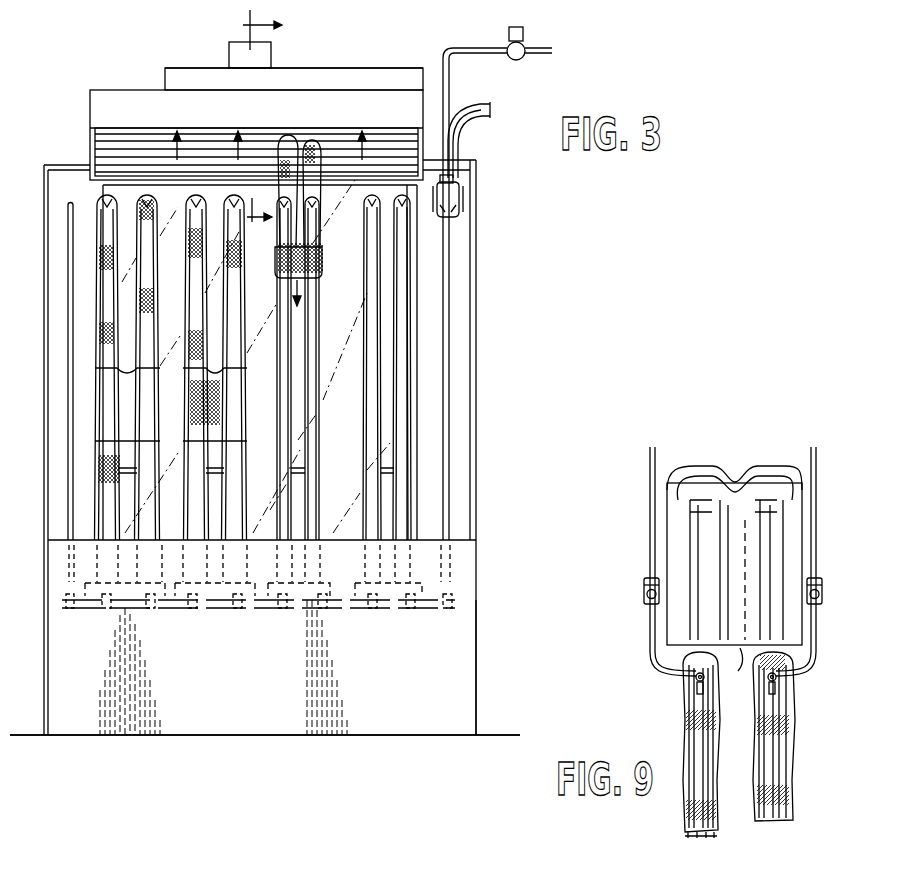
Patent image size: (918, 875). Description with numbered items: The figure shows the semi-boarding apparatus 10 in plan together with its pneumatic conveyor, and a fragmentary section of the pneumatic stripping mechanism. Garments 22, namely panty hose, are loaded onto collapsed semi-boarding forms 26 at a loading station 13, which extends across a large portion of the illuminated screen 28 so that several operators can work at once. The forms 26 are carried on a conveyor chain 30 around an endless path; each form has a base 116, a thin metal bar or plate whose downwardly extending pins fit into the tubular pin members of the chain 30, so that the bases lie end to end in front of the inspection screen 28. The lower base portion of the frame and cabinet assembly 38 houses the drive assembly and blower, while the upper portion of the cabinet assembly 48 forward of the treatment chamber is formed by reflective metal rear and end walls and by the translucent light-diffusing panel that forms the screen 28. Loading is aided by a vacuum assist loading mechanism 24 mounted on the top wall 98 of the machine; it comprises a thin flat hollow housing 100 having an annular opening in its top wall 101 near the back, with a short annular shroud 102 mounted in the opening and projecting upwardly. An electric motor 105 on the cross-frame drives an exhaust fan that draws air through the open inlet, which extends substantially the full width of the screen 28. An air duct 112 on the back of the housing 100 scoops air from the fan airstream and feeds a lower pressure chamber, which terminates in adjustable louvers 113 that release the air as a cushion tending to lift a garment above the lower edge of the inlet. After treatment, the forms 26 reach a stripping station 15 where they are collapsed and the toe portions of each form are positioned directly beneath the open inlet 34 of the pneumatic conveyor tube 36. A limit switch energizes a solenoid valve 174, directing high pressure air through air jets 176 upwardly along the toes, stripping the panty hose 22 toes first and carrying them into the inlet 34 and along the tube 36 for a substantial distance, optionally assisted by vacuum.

In FIG. 3, the section/direction indicator 10 is at (262, 121).
In FIG. 3, the loading station 13 is at (350, 286).
In FIG. 3, the stripping station 15 is at (470, 200).
In FIG. 3, the garments 22 is at (103, 331).
In FIG. 9, the garments 22 is at (793, 765).
In FIG. 3, the vacuum assist loading mechanism 24 is at (356, 72).
In FIG. 3, the semi-boarding forms 26 is at (449, 265).
In FIG. 9, the semi-boarding forms 26 is at (690, 840).
In FIG. 3, the illuminated screen 28 is at (273, 384).
In FIG. 3, the conveyor chain 30 is at (342, 608).
In FIG. 9, the inlet of pneumatic conveyor tube 34 is at (731, 670).
In FIG. 3, the pneumatic conveyor tube 36 is at (478, 101).
In FIG. 9, the pneumatic conveyor tube 36 is at (772, 548).
In FIG. 3, the frame and cabinet assembly 38 is at (477, 675).
In FIG. 3, the cabinet assembly 48 is at (477, 414).
In FIG. 3, the top wall 98 is at (48, 165).
In FIG. 3, the housing 100 is at (118, 86).
In FIG. 3, the top wall of housing 101 is at (387, 92).
In FIG. 3, the annular shroud 102 is at (318, 68).
In FIG. 3, the electric motor 105 is at (271, 66).
In FIG. 3, the air duct 112 is at (265, 805).
In FIG. 3, the adjustable louvers 113 is at (93, 160).
In FIG. 3, the base 116 is at (205, 602).
In FIG. 3, the solenoid valve 174 is at (522, 46).
In FIG. 3, the air jets 176 is at (447, 214).
In FIG. 9, the air jets 176 is at (653, 674).